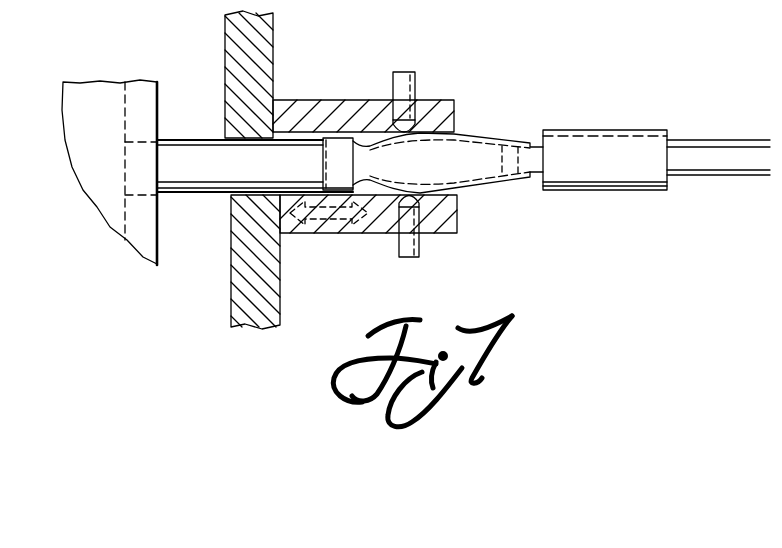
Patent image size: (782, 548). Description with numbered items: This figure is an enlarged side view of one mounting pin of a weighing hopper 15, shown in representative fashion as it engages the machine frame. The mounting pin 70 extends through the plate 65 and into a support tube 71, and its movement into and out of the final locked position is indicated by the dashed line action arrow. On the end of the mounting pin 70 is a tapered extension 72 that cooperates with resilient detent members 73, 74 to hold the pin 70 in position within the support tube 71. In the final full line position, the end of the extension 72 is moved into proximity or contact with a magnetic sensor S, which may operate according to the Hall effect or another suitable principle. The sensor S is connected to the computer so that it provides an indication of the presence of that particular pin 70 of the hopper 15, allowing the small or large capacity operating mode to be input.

The hopper 15 is at (87, 177).
The plate 65 is at (258, 53).
The mounting pin 70 is at (192, 180).
The support tube 71 is at (338, 108).
The tapered extension 72 is at (467, 153).
The resilient detent member 73 is at (408, 92).
The resilient detent member 74 is at (414, 250).
The magnetic sensor S is at (615, 143).